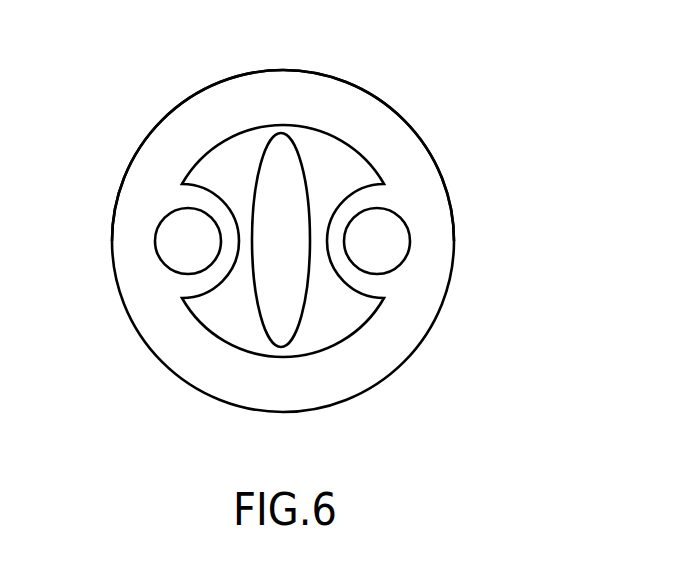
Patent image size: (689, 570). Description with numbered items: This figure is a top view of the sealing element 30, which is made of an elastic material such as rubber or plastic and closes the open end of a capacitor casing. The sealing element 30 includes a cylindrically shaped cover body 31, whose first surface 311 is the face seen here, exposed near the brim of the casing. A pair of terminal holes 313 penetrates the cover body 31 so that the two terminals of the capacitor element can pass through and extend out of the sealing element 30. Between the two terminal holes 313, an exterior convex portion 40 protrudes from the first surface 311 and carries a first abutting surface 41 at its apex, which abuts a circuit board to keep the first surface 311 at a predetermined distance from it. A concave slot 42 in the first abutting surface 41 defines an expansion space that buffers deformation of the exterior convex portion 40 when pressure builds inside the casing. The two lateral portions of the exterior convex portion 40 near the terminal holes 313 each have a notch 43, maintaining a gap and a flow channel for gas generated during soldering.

The sealing element 30 is at (449, 207).
The cover body 31 is at (435, 318).
The first surface 311 is at (398, 139).
The terminal holes 313 is at (390, 250).
The exterior convex portion 40 is at (255, 128).
The first abutting surface 41 is at (222, 158).
The slot 42 is at (290, 167).
The notches 43 is at (201, 218).